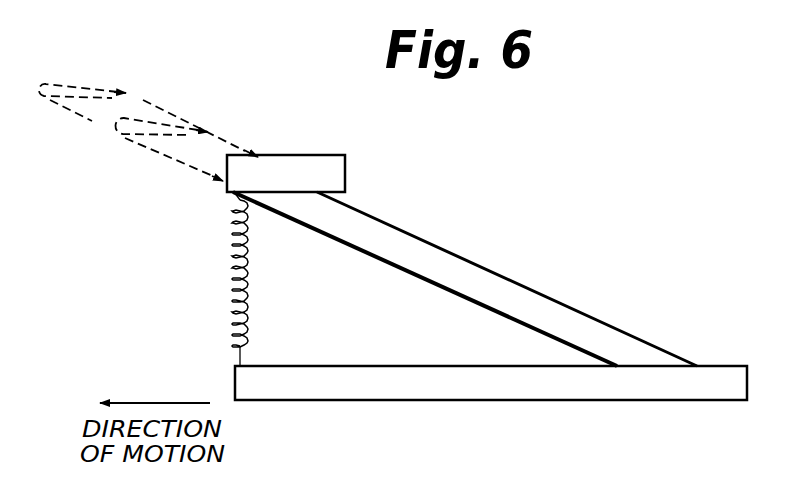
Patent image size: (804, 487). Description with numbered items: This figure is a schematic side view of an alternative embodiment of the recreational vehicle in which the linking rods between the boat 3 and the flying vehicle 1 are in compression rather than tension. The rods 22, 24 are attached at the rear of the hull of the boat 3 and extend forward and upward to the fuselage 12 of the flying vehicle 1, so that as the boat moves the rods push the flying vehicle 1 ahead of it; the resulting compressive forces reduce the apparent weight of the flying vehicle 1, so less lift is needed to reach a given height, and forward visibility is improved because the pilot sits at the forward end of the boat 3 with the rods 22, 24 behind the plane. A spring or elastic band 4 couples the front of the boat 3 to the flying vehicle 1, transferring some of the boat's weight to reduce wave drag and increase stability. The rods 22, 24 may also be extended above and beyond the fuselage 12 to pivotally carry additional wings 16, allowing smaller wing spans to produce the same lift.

The flying vehicle 1 is at (222, 180).
The boat 3 is at (353, 402).
The spring or elastic band 4 is at (232, 285).
The fuselage 12 is at (347, 157).
The wings 16 is at (73, 77).
The forward pair of rods 22 is at (104, 126).
The aft pair of rods 24 is at (143, 97).